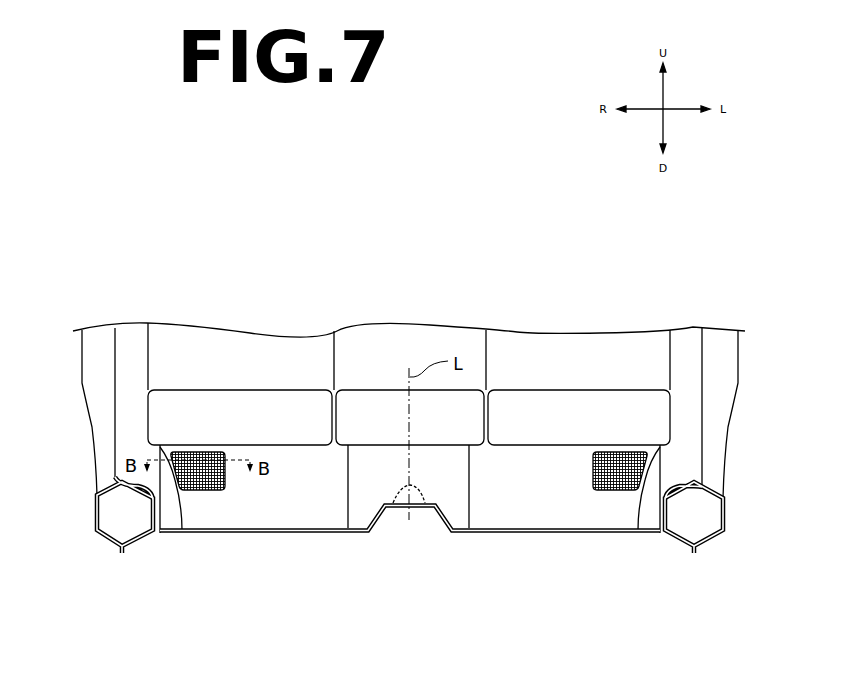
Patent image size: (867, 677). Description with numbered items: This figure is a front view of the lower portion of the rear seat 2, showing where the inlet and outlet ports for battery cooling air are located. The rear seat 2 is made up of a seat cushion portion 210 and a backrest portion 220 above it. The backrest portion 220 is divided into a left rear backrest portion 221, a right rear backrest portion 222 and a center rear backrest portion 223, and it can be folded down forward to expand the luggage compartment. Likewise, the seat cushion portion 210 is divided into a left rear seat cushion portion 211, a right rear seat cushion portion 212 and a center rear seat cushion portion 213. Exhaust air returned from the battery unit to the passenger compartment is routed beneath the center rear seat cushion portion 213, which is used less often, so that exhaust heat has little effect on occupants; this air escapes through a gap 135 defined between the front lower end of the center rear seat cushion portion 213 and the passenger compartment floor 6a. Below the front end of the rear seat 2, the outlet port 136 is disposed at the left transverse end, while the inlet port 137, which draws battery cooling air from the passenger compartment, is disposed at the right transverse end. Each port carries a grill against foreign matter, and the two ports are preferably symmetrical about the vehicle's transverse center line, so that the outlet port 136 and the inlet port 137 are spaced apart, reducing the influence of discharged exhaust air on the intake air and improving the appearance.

The rear seat 2 is at (632, 332).
The backrest portion 220 is at (409, 353).
The left rear backrest portion 221 is at (561, 348).
The right rear backrest portion 222 is at (243, 348).
The center rear backrest portion 223 is at (410, 350).
The seat cushion portion 210 is at (410, 512).
The left rear seat cushion portion 211 is at (565, 413).
The right rear seat cushion portion 212 is at (290, 418).
The center rear seat cushion portion 213 is at (450, 417).
The passenger compartment floor 6a is at (395, 505).
The gap 135 is at (423, 495).
The outlet port 136 is at (620, 490).
The inlet port 137 is at (208, 492).